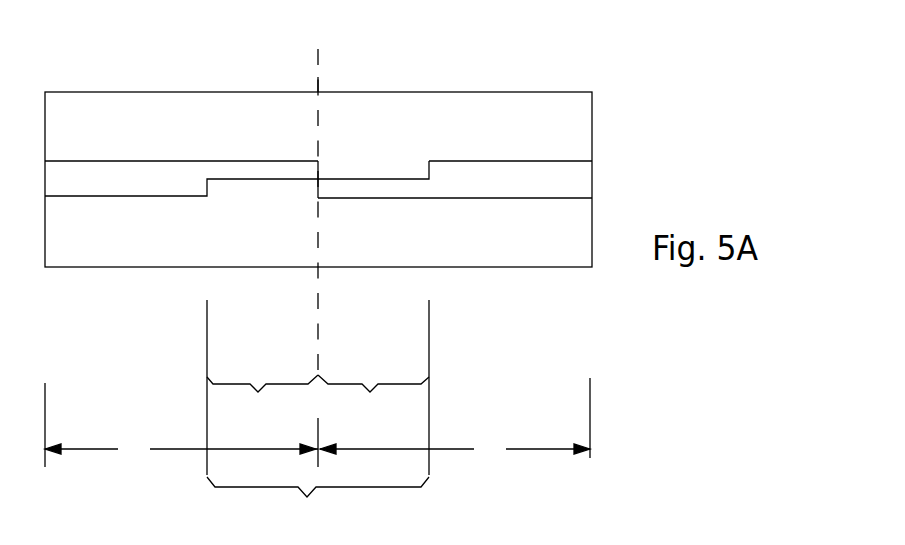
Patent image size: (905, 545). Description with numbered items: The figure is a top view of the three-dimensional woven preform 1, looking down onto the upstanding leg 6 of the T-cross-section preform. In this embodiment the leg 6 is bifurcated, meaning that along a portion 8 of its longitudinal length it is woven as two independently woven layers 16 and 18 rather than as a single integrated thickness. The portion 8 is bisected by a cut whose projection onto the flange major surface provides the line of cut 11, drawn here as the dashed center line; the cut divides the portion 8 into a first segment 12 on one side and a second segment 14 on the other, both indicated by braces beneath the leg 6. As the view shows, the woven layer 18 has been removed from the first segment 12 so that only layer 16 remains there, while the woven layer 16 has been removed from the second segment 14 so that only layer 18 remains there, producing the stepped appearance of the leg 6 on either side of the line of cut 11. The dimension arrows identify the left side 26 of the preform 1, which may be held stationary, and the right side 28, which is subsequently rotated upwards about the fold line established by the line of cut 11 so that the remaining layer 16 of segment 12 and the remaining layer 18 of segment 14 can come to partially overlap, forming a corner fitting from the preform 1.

The 3D woven preform 1 is at (613, 112).
The upstanding leg 6 is at (565, 179).
The line of cut 11 is at (318, 77).
The first segment 12 is at (262, 399).
The second segment 14 is at (373, 397).
The independently woven layer 16 is at (258, 168).
The independently woven layer 18 is at (390, 190).
The portion 8 is at (318, 503).
The left side 26 is at (181, 449).
The right side 28 is at (455, 449).